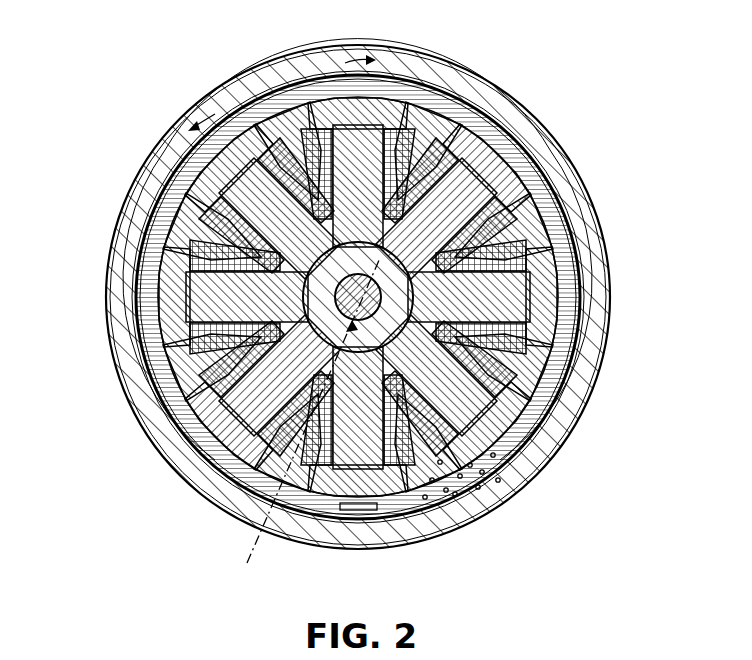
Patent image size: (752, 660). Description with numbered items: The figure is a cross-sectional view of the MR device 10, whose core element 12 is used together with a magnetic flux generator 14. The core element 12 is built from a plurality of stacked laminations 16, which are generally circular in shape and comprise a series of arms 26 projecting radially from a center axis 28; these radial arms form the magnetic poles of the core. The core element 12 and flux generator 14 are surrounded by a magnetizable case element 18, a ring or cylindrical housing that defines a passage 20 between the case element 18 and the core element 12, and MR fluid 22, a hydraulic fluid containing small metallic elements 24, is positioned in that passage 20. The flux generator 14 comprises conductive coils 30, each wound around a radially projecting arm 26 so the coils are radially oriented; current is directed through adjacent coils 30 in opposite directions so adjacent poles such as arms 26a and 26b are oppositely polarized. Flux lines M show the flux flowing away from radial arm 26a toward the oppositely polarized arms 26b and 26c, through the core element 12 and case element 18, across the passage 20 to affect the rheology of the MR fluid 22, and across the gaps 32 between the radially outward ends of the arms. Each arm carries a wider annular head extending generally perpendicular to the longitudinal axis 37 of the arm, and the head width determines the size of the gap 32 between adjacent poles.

The MR device 10 is at (575, 60).
The core element 12 is at (548, 212).
The magnetic flux generator 14 is at (572, 285).
The stacked laminations 16 is at (586, 370).
The case element 18 is at (158, 426).
The passage 20 is at (535, 470).
The MR fluid 22 is at (188, 485).
The metallic elements 24 is at (470, 497).
The arms 26 is at (385, 297).
The radial arm 26a is at (300, 96).
The arm 26b is at (445, 104).
The arm 26c is at (176, 214).
The center axis 28 is at (372, 272).
The conductive coils 30 is at (306, 297).
The gaps 32 is at (360, 510).
The longitudinal axis 37 is at (252, 541).
The flux lines M is at (384, 60).